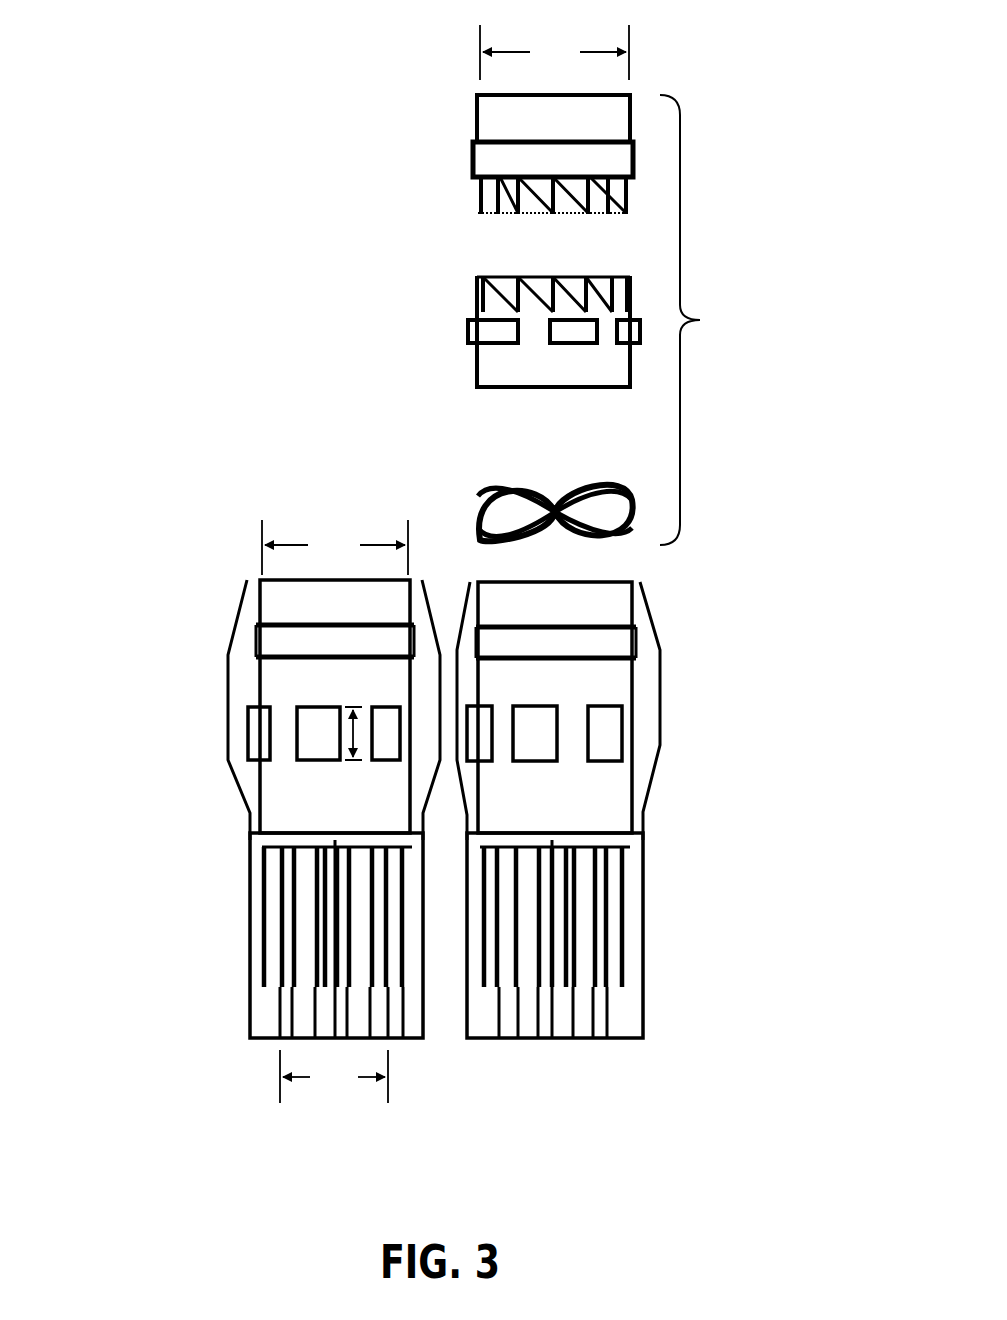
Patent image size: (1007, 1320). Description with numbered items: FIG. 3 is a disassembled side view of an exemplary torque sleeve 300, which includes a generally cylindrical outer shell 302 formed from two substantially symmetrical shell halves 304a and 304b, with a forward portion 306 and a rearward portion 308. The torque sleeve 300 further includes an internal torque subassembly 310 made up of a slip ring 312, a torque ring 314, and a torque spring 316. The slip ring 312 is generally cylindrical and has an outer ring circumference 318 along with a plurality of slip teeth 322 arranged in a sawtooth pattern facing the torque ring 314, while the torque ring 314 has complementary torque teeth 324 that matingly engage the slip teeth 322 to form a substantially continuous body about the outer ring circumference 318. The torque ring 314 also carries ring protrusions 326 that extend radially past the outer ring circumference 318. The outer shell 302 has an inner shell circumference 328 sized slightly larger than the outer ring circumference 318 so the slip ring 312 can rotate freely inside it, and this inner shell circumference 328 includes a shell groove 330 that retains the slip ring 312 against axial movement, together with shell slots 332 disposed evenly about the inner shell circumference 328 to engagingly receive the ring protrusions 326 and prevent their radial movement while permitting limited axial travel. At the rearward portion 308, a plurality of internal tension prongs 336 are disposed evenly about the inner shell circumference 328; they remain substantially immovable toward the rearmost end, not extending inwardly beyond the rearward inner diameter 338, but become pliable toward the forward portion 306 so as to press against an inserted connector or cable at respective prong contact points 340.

The torque sleeve 300 is at (120, 134).
The outer shell 302 is at (238, 620).
The shell half 304a is at (230, 760).
The shell half 304b is at (643, 1027).
The forward portion 306 is at (738, 698).
The rearward portion 308 is at (745, 947).
The internal torque subassembly 310 is at (711, 320).
The slip ring 312 is at (477, 157).
The torque ring 314 is at (350, 335).
The torque spring 316 is at (512, 483).
The outer ring circumference 318 is at (554, 52).
The slip teeth 322 is at (478, 212).
The torque teeth 324 is at (478, 278).
The ring protrusions 326 is at (468, 332).
The inner shell circumference 328 is at (335, 547).
The shell groove 330 is at (258, 645).
The shell slots 332 is at (528, 740).
The internal tension prongs 336 is at (590, 880).
The rearward inner diameter 338 is at (334, 1076).
The prong contact points 340 is at (295, 855).